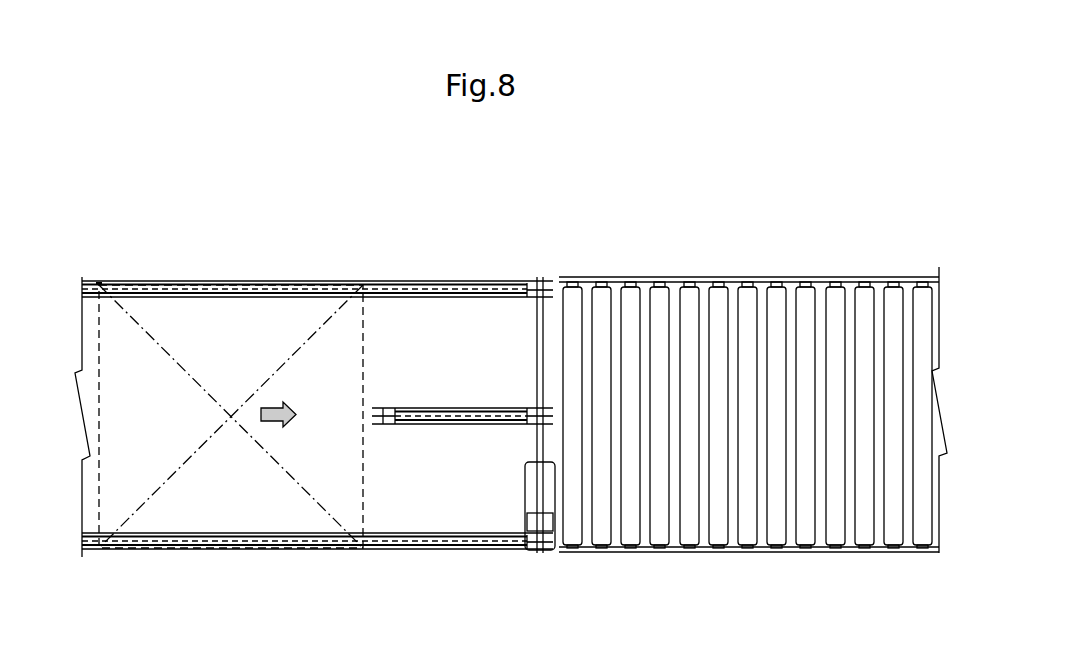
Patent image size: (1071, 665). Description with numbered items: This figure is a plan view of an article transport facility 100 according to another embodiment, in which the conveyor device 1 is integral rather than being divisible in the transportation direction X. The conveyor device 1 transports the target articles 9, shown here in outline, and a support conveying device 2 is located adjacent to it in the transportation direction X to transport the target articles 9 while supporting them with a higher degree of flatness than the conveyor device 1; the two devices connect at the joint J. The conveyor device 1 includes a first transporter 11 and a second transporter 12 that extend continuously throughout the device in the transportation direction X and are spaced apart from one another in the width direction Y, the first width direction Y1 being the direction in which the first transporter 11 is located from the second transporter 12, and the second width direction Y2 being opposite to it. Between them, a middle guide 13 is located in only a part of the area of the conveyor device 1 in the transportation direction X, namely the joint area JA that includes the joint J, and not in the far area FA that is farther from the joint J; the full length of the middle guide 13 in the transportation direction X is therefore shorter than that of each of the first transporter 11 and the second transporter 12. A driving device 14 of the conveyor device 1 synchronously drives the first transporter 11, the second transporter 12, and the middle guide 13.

The conveyor device 1 is at (252, 242).
The support conveying device 2 is at (862, 237).
The target article 9 is at (370, 505).
The first transporter 11 is at (434, 263).
The second transporter 12 is at (460, 563).
The middle guide 13 is at (444, 389).
The driving device 14 is at (512, 498).
The article transport facility 100 is at (715, 247).
The joint J is at (562, 259).
The far area FA is at (352, 134).
The joint area JA is at (540, 134).
The transportation direction X is at (306, 616).
The width direction Y is at (56, 355).
The first width direction Y1 is at (50, 326).
The second width direction Y2 is at (50, 525).